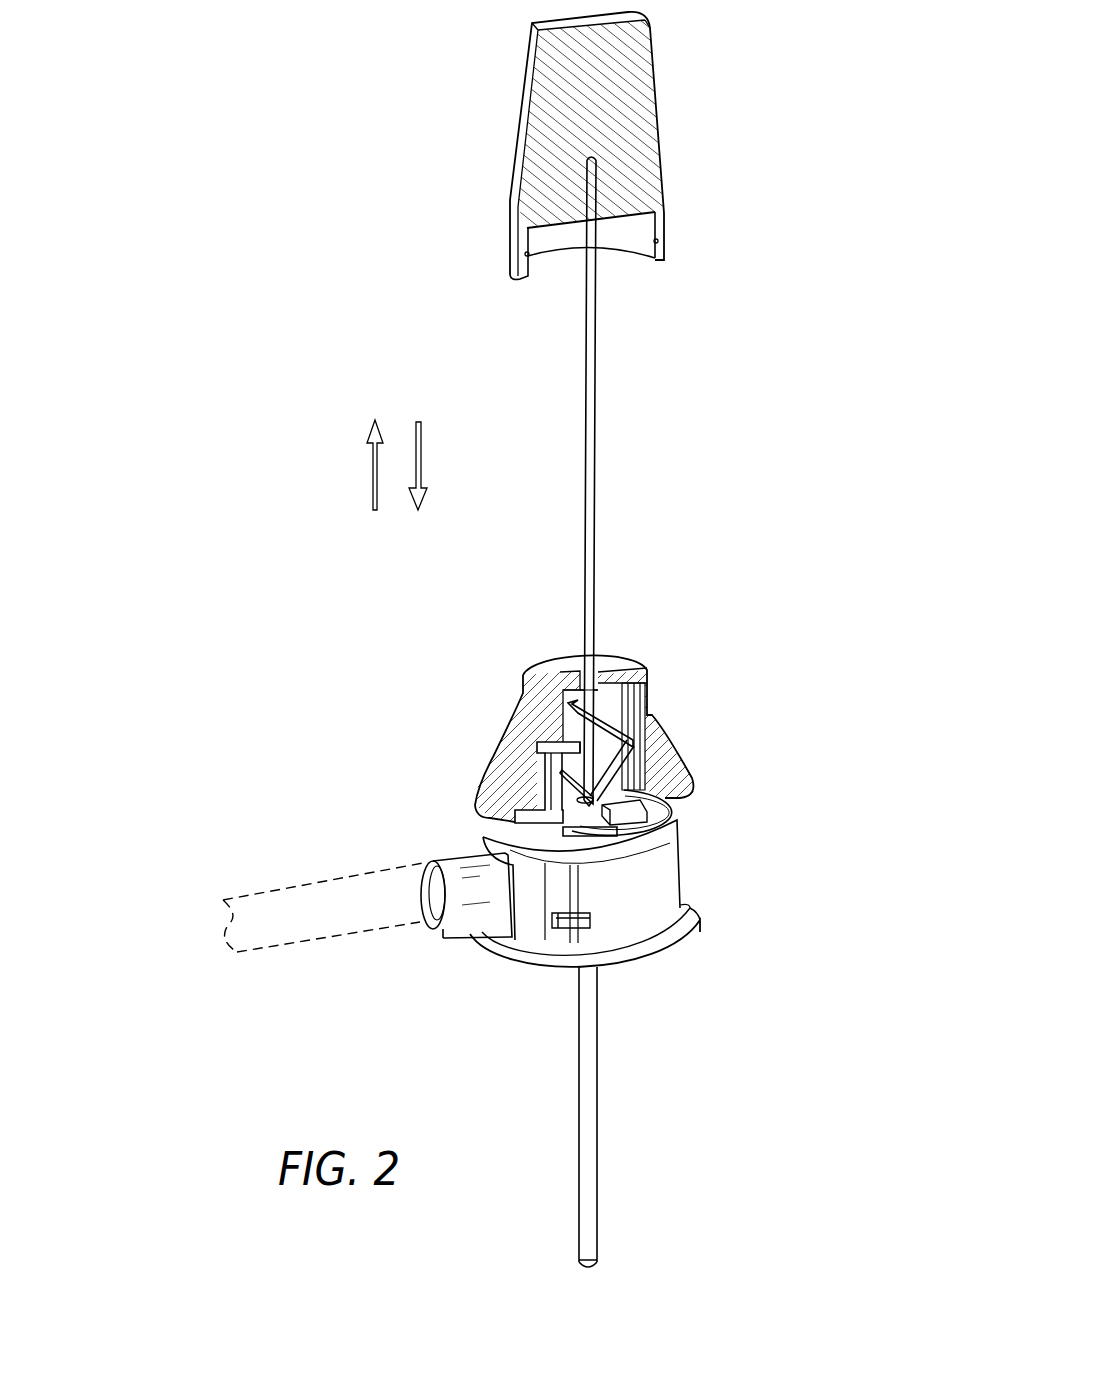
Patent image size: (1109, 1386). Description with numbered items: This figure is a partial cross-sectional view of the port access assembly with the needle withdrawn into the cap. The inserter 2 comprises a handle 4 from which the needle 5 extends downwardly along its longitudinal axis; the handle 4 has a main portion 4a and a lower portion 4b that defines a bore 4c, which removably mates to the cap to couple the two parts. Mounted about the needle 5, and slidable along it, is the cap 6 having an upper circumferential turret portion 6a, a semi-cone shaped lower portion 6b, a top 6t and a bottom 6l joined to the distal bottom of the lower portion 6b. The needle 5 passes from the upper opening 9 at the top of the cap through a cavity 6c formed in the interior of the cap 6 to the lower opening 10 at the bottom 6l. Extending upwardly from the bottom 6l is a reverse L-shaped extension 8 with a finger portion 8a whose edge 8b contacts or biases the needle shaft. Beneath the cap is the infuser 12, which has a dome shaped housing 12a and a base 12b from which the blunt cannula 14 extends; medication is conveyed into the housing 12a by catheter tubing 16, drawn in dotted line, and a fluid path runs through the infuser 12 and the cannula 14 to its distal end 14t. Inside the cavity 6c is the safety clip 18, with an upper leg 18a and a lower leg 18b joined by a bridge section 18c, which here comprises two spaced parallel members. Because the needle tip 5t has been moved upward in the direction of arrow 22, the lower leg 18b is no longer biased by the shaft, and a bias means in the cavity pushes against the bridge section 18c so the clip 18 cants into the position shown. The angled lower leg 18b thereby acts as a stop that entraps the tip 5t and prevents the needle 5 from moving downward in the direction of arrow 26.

The inserter 2 is at (713, 253).
The handle 4 is at (662, 133).
The main portion 4a is at (583, 109).
The lower portion 4b is at (508, 254).
The bore 4c is at (618, 268).
The needle 5 is at (600, 456).
The tip 5t is at (594, 782).
The cap 6 is at (678, 737).
The upper circumferential turret portion 6a is at (518, 697).
The semi-cone shaped lower portion 6b is at (490, 767).
The cavity 6c is at (608, 700).
The top portion 6t is at (627, 665).
The bottom portion 6l is at (673, 810).
The reverse L-shaped extension 8 is at (537, 783).
The finger portion 8a is at (560, 747).
The edge 8b is at (580, 723).
The upper opening 9 is at (580, 672).
The opening 10 is at (680, 860).
The infuser 12 is at (478, 974).
The dome shaped housing 12a is at (655, 878).
The base portion 12b is at (700, 940).
The blunt cannula 14 is at (598, 1078).
The distal end 14t is at (598, 1267).
The catheter tubing 16 is at (307, 922).
The clip 18 is at (634, 757).
The upper leg 18a is at (614, 722).
The lower leg 18b is at (650, 821).
The bridge section 18c is at (634, 770).
The directional arrow 22 is at (372, 468).
The directional arrow 26 is at (421, 470).